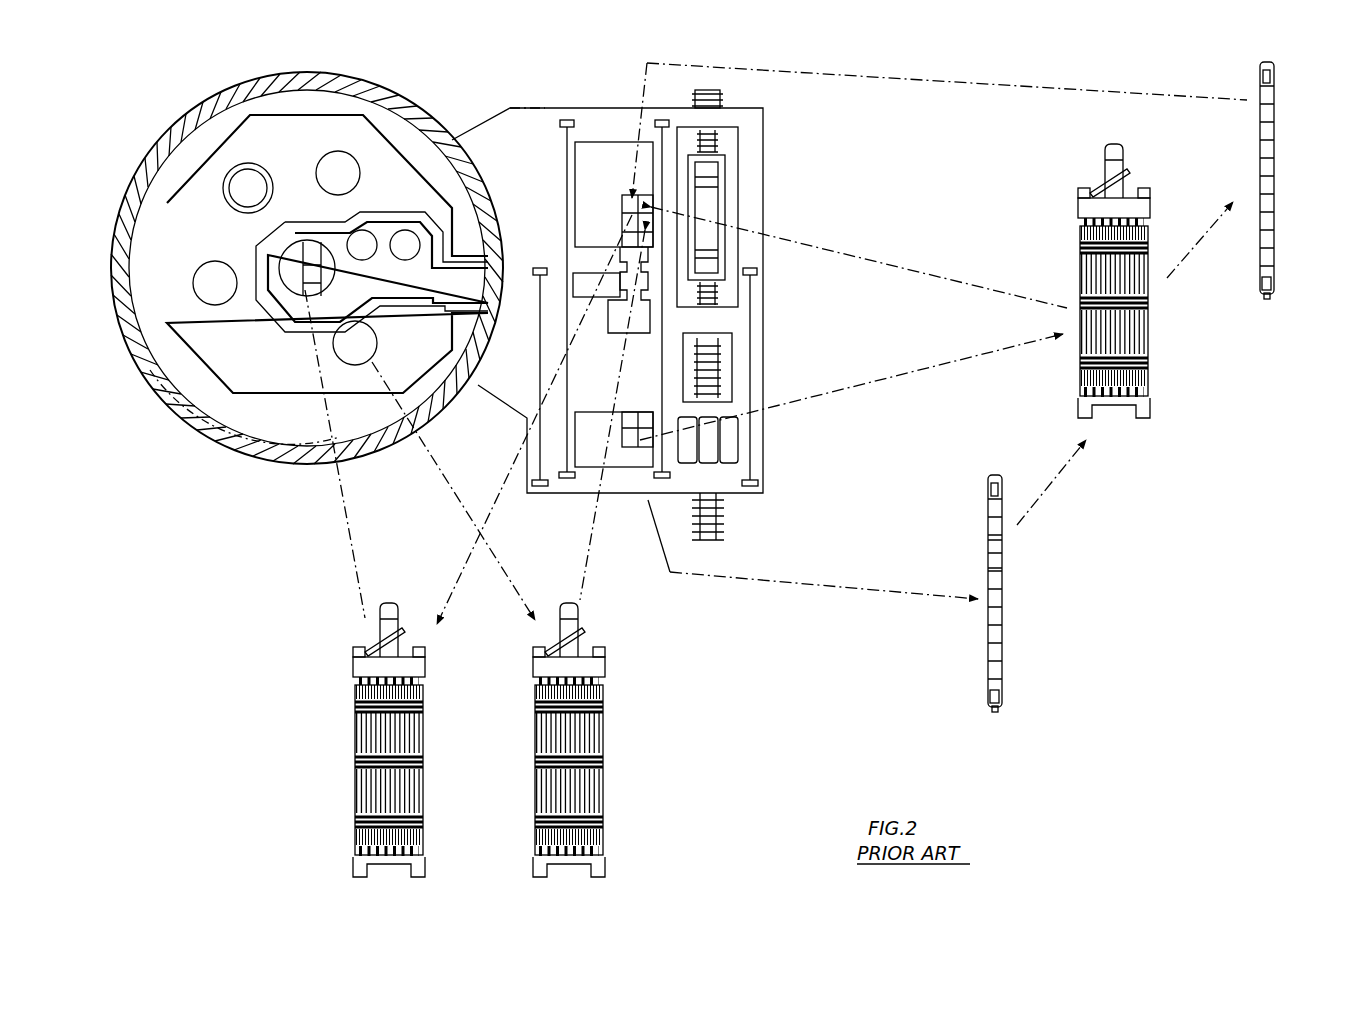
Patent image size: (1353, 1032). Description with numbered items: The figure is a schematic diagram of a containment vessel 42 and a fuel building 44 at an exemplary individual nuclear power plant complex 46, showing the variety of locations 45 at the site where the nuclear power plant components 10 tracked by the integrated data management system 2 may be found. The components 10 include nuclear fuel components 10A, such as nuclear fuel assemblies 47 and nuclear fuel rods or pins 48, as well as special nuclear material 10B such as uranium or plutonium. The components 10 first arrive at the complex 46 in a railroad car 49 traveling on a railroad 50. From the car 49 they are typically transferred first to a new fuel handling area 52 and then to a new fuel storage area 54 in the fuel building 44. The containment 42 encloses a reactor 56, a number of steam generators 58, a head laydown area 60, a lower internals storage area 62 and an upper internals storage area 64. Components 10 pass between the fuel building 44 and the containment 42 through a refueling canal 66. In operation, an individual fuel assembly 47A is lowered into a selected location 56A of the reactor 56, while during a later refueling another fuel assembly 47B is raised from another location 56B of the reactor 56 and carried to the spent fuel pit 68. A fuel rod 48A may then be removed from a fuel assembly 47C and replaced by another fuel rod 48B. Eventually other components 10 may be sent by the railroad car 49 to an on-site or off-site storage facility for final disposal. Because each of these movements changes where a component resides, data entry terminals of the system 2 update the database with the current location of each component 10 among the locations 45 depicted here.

The integrated data management system 2 is at (217, 618).
The nuclear power plant components 10 is at (865, 652).
The nuclear fuel components 10A is at (523, 745).
The special nuclear material (SNM) 10B is at (1000, 547).
The containment vessel 42 is at (198, 430).
The fuel building 44 is at (756, 140).
The locations 45 is at (266, 252).
The nuclear power plant complex 46 is at (302, 534).
The nuclear fuel assemblies 47 is at (518, 893).
The fuel assembly 47A is at (366, 738).
The fuel assembly 47B is at (605, 740).
The fuel assembly 47C is at (1150, 334).
The nuclear fuel rods or pins 48 is at (1293, 325).
The fuel rod 48A is at (1272, 225).
The fuel rod 48B is at (1003, 668).
The railroad car 49 is at (718, 198).
The railroad 50 is at (720, 532).
The new fuel handling area 52 is at (738, 452).
The new fuel storage area 54 is at (590, 490).
The reactor 56 is at (315, 274).
The location 56A is at (300, 275).
The location 56B is at (322, 258).
The steam generators (S/G) 58 is at (339, 153).
The head laydown area 60 is at (254, 172).
The lower internals storage area 62 is at (363, 230).
The upper internals storage area 64 is at (406, 230).
The refueling canal 66 is at (477, 288).
The spent fuel pit 68 is at (614, 205).